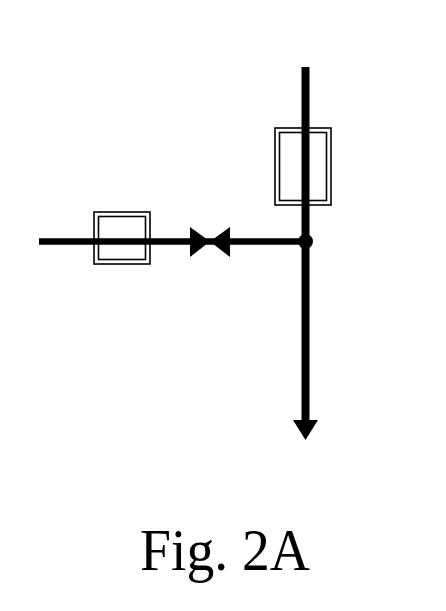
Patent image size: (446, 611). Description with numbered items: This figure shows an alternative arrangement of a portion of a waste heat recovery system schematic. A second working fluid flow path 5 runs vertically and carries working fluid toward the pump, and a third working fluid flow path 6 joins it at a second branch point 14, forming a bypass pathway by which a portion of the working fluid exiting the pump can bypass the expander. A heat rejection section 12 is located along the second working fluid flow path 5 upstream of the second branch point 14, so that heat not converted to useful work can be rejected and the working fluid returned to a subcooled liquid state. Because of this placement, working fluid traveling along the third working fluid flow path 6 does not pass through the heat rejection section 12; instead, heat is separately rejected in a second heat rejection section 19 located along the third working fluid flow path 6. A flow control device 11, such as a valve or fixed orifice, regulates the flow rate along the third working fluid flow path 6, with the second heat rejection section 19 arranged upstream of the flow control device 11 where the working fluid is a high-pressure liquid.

The second working fluid flow path 5 is at (310, 102).
The third working fluid flow path 6 is at (72, 245).
The flow control device 11 is at (210, 243).
The heat rejection section 12 is at (335, 160).
The second branch point 14 is at (314, 243).
The second heat rejection section 19 is at (140, 210).